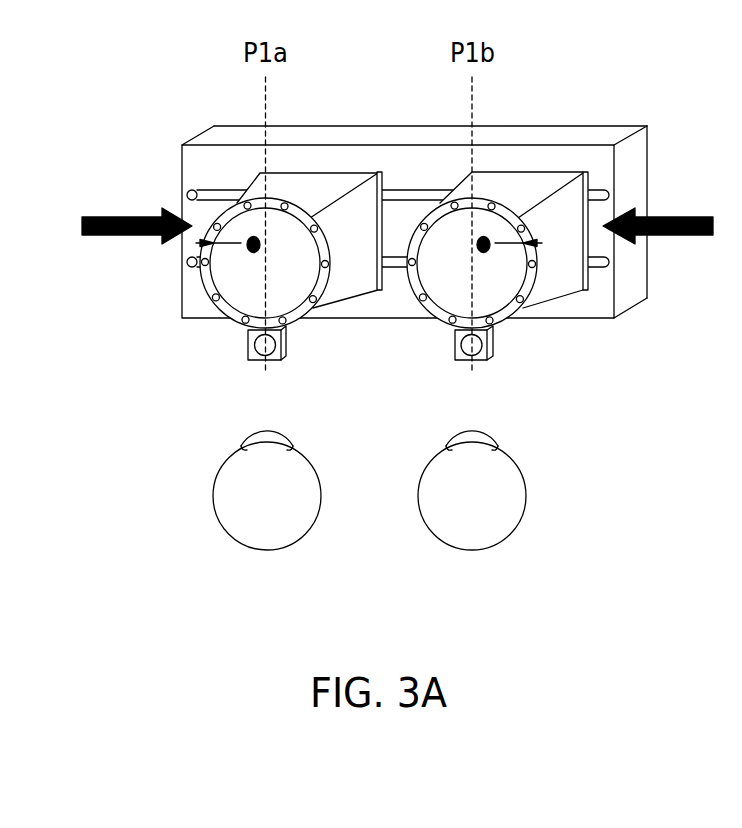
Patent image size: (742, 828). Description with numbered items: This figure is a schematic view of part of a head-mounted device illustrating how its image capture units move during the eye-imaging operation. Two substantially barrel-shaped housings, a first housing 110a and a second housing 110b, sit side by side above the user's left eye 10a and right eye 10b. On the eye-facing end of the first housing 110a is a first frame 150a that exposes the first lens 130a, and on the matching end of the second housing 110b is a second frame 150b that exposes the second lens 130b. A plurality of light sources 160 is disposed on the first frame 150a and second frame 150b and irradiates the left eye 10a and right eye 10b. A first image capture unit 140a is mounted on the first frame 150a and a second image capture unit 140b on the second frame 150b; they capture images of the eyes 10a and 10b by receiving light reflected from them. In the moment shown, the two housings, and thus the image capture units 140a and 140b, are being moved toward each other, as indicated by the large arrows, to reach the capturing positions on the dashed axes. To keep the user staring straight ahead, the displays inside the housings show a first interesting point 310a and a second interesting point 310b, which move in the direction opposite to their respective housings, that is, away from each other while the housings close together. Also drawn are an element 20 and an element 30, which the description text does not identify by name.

The left eye 10a is at (213, 494).
The right eye 10b is at (526, 492).
The guide rod 20 is at (395, 260).
The housing 30 is at (555, 126).
The first housing 110a is at (333, 182).
The second housing 110b is at (565, 180).
The first lens 130a is at (241, 223).
The second lens 130b is at (495, 223).
The first image capture unit 140a is at (253, 360).
The second image capture unit 140b is at (480, 360).
The first frame 150a is at (233, 322).
The second frame 150b is at (502, 320).
The light sources 160 is at (215, 297).
The first interesting point 310a is at (259, 249).
The second interesting point 310b is at (478, 250).